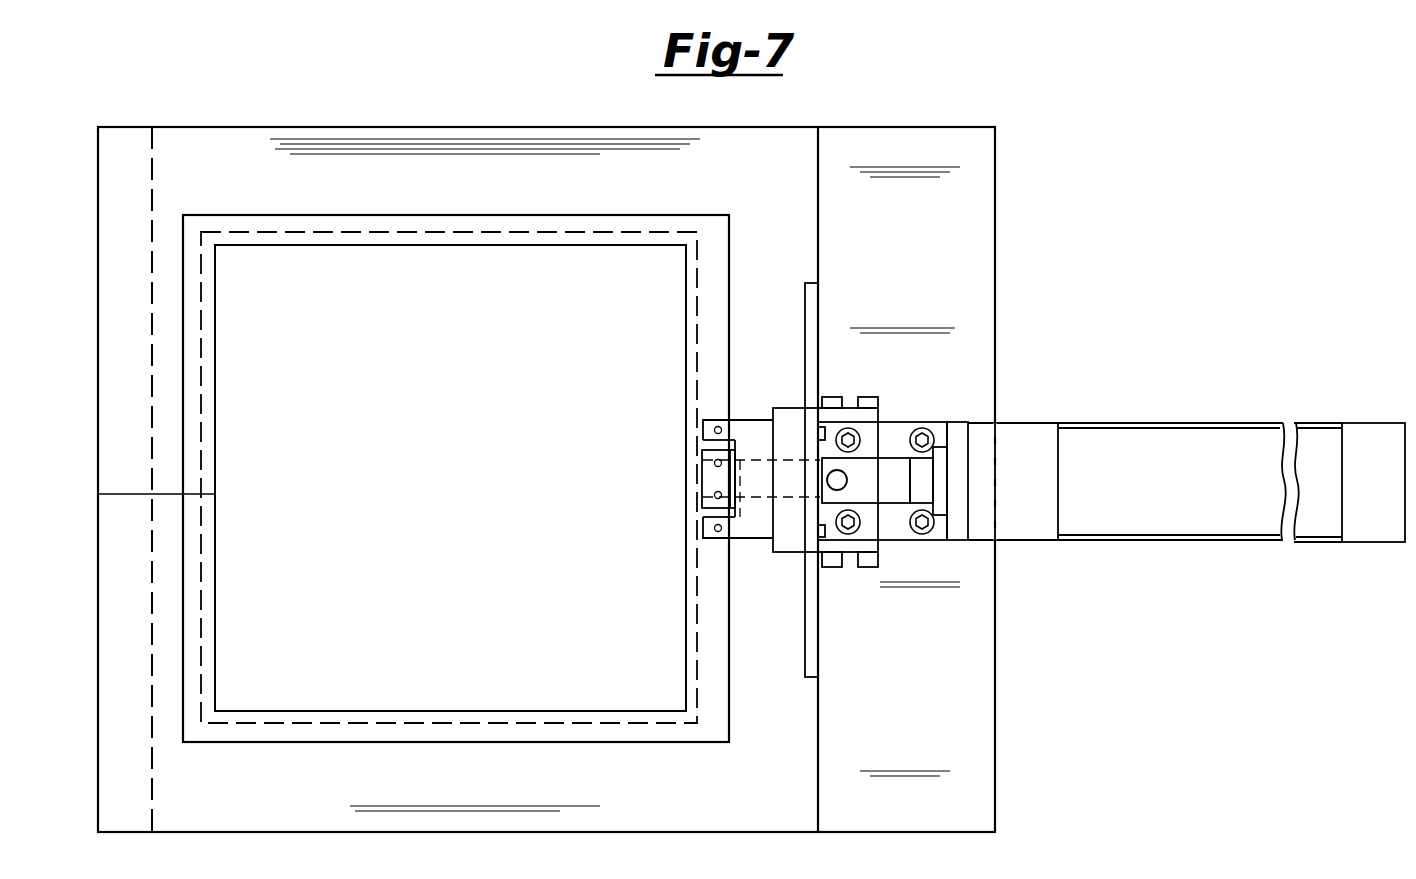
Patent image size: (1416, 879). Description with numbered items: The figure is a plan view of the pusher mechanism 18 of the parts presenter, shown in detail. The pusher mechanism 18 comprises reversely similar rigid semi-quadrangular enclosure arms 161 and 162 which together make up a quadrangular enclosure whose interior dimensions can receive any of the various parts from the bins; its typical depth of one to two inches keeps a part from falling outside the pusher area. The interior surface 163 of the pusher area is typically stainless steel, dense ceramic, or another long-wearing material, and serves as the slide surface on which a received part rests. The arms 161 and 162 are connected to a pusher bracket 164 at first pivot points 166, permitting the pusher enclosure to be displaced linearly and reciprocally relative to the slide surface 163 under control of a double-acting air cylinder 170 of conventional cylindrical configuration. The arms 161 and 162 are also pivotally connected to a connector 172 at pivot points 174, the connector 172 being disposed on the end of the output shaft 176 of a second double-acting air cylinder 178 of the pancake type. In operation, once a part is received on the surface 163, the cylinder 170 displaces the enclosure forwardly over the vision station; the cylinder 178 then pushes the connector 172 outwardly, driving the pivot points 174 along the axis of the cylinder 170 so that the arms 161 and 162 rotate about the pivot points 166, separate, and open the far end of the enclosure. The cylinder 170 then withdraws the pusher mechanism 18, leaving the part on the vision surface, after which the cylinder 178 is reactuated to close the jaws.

The pusher mechanism 18 is at (1024, 206).
The semi-quadrangular enclosure arm 161 is at (450, 138).
The semi-quadrangular enclosure arm 162 is at (427, 813).
The interior surface 163 is at (463, 468).
The pusher bracket 164 is at (757, 538).
The first pivot points 166 is at (705, 428).
The double-acting air cylinder 170 is at (1236, 392).
The connector 172 is at (707, 465).
The pivot points 174 is at (710, 463).
The output shaft 176 is at (757, 460).
The second double-acting air cylinder 178 is at (788, 418).